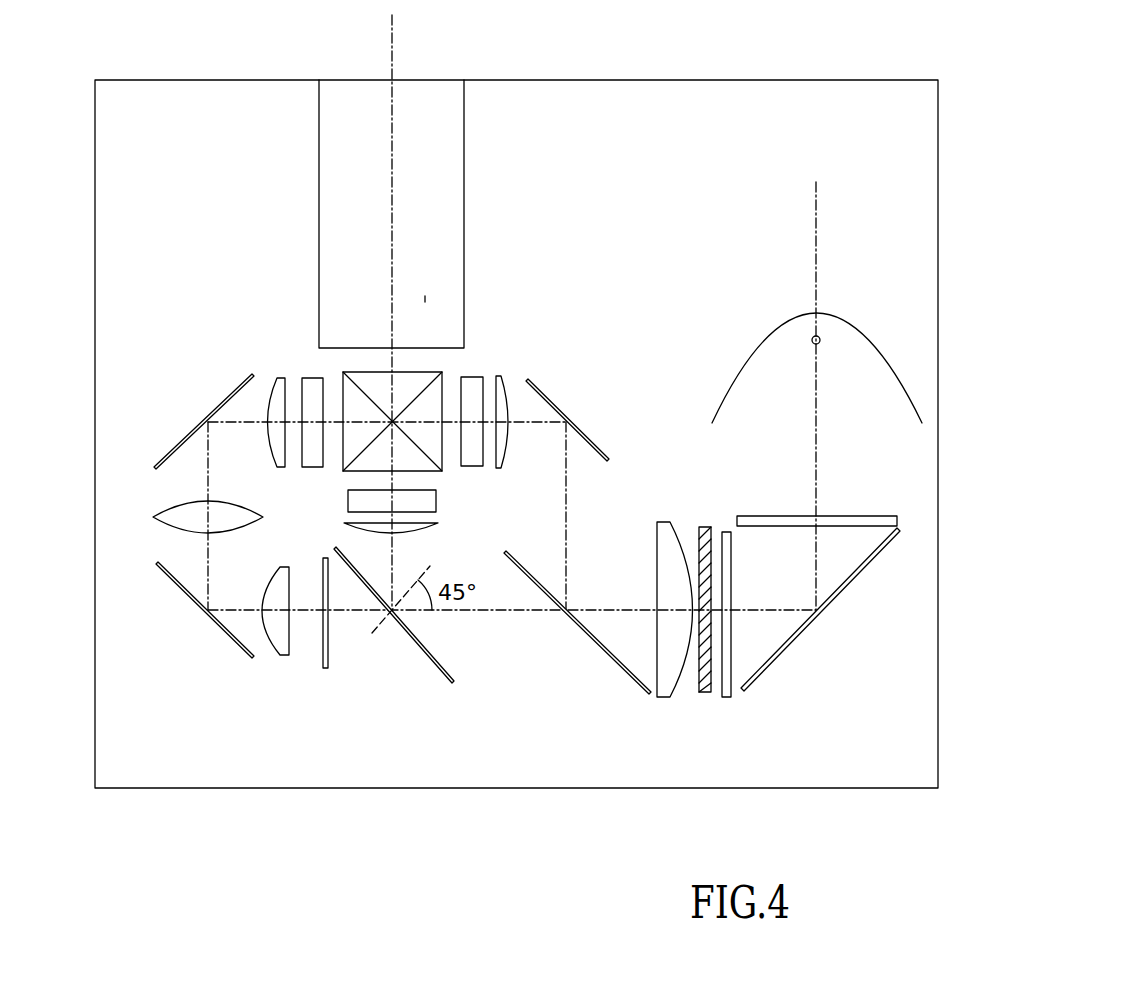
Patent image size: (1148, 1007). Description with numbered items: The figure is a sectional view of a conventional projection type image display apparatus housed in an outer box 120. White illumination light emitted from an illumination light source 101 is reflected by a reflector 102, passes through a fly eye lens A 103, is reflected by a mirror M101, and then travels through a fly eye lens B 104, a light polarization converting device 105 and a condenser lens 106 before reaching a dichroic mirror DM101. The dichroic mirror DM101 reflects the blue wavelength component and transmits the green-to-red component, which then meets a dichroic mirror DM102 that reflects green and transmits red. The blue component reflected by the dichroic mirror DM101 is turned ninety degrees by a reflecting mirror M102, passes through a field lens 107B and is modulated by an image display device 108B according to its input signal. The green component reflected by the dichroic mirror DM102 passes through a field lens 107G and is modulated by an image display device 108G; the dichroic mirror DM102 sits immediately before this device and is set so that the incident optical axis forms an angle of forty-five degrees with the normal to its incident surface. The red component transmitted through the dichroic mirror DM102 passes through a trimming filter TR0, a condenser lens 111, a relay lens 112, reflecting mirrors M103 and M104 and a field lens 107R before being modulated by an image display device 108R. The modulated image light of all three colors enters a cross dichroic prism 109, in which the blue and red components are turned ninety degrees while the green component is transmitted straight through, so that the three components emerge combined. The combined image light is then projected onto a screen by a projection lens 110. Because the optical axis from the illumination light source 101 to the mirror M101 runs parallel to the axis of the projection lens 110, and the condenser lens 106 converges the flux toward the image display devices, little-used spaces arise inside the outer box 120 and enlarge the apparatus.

The outer box 120 is at (630, 80).
The projection lens 110 is at (458, 151).
The reflector 102 is at (842, 318).
The illumination light source 101 is at (820, 342).
The fly eye lens A 103 is at (838, 516).
The mirror M101 is at (835, 598).
The fly eye lens B 104 is at (727, 697).
The light polarization converting device 105 is at (703, 692).
The condenser lens 106 is at (664, 697).
The dichroic mirror DM101 is at (590, 645).
The dichroic mirror DM102 is at (423, 650).
The trimming filter TR0 is at (325, 668).
The condenser lens 111 is at (280, 652).
The reflecting mirror M103 is at (214, 624).
The relay lens 112 is at (166, 511).
The reflecting mirror M104 is at (220, 406).
The field lens 107R is at (271, 378).
The image display device 108R is at (305, 378).
The cross dichroic prism 109 is at (347, 463).
The image display device 108B is at (472, 377).
The field lens 107B is at (499, 379).
The reflecting mirror M102 is at (596, 447).
The image display device 108G is at (437, 500).
The field lens 107G is at (437, 530).